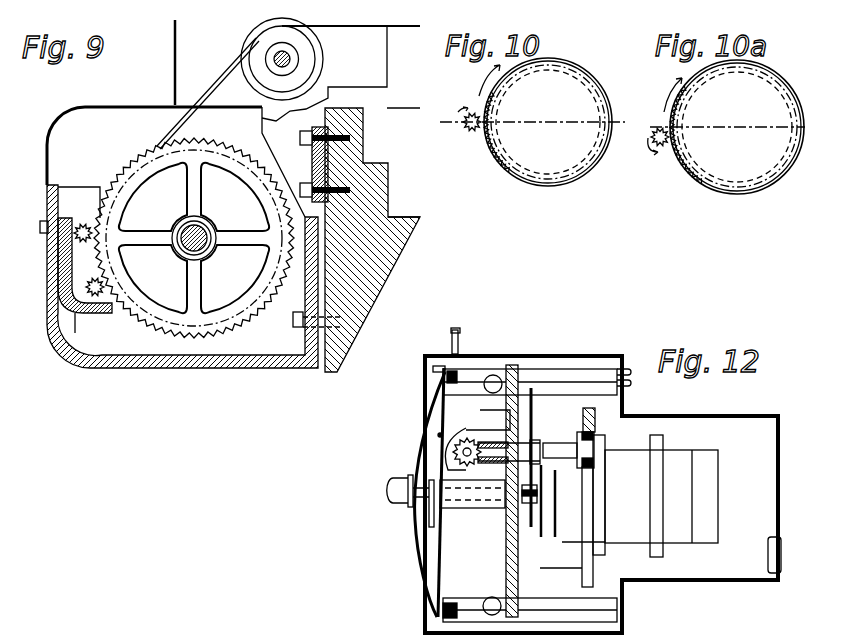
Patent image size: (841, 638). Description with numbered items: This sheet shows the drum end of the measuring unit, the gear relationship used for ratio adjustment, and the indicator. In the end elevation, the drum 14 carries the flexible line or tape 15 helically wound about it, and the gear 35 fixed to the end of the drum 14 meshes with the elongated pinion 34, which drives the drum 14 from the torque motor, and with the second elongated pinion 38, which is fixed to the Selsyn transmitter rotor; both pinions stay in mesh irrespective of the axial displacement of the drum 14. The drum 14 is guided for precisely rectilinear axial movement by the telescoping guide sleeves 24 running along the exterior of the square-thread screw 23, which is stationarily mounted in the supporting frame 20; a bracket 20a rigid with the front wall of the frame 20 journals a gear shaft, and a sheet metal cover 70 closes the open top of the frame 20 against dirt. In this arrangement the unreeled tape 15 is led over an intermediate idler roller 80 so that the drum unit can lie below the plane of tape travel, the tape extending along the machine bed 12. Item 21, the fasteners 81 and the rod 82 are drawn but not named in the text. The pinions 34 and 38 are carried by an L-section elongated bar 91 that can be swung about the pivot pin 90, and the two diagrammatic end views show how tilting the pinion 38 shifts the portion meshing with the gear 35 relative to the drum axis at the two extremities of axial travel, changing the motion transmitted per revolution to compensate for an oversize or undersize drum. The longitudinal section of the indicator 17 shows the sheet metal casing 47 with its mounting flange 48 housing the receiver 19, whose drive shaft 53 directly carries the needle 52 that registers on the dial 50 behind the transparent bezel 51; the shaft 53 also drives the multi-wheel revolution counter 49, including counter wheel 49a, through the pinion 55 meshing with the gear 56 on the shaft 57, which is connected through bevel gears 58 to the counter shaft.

In FIG. 9, the machine bed 12 is at (348, 115).
In FIG. 9, the drum 14 is at (222, 152).
In FIG. 10, the drum 14 is at (545, 184).
In FIG. 10A, the drum 14 is at (735, 191).
In FIG. 9, the flexible line 15 is at (216, 88).
In FIG. 10, the flexible line 15 is at (578, 63).
In FIG. 10A, the flexible line 15 is at (800, 70).
In FIG. 12, the indicator 17 is at (378, 520).
In FIG. 12, the receiver 19 is at (687, 455).
In FIG. 9, the supporting frame 20 is at (170, 370).
In FIG. 9, the bracket 20a is at (76, 322).
In FIG. 9, the mounting bracket 21 is at (325, 258).
In FIG. 9, the screw 23 is at (205, 250).
In FIG. 9, the guide sleeves 24 is at (216, 222).
In FIG. 9, the elongated pinion 34 is at (86, 287).
In FIG. 9, the gear 35 is at (142, 158).
In FIG. 10, the gear 35 is at (490, 160).
In FIG. 10A, the gear 35 is at (686, 168).
In FIG. 9, the elongated pinion 38 is at (83, 224).
In FIG. 10, the elongated pinion 38 is at (468, 130).
In FIG. 10A, the elongated pinion 38 is at (656, 148).
In FIG. 12, the sheet metal casing 47 is at (544, 356).
In FIG. 12, the mounting flange 48 is at (457, 328).
In FIG. 12, the revolution counter 49 is at (438, 435).
In FIG. 12, the counter wheel 49a is at (440, 452).
In FIG. 12, the dial 50 is at (438, 552).
In FIG. 12, the transparent bezel 51 is at (415, 524).
In FIG. 12, the needle 52 is at (431, 411).
In FIG. 12, the drive shaft 53 is at (497, 503).
In FIG. 12, the pinion 55 is at (527, 505).
In FIG. 12, the gear 56 is at (535, 413).
In FIG. 12, the shaft 57 is at (568, 448).
In FIG. 12, the bevel gears 58 is at (468, 440).
In FIG. 9, the sheet metal cover 70 is at (97, 106).
In FIG. 9, the idler roller 80 is at (310, 51).
In FIG. 9, the bolts 81 is at (312, 159).
In FIG. 9, the rod 82 is at (172, 62).
In FIG. 9, the pivot pin 90 is at (44, 233).
In FIG. 9, the elongated bar 91 is at (65, 264).